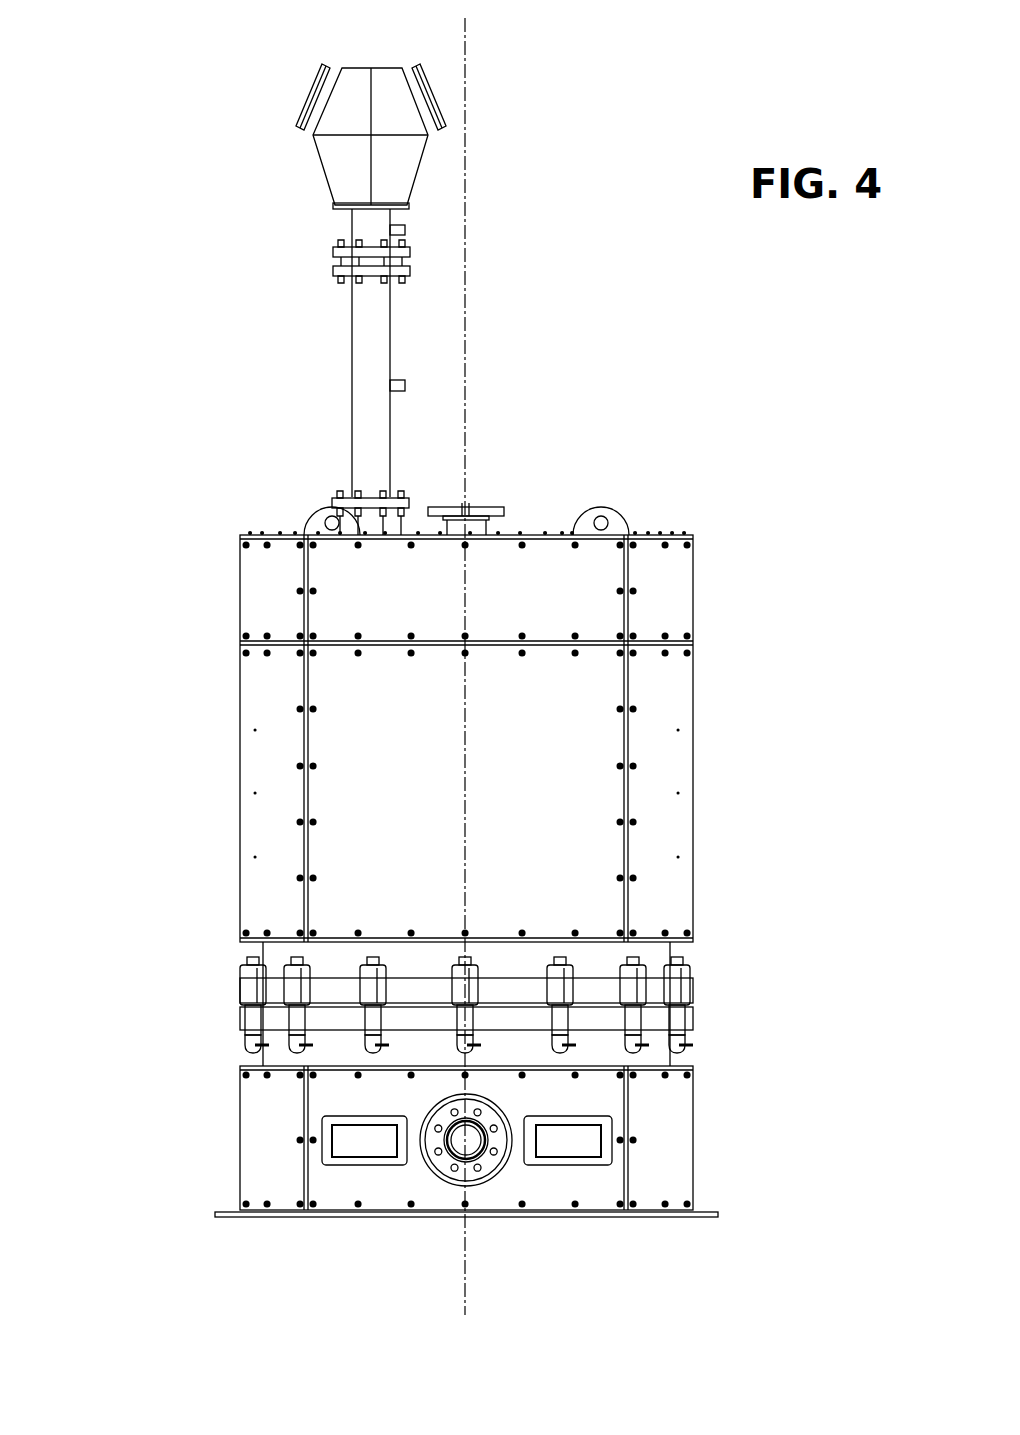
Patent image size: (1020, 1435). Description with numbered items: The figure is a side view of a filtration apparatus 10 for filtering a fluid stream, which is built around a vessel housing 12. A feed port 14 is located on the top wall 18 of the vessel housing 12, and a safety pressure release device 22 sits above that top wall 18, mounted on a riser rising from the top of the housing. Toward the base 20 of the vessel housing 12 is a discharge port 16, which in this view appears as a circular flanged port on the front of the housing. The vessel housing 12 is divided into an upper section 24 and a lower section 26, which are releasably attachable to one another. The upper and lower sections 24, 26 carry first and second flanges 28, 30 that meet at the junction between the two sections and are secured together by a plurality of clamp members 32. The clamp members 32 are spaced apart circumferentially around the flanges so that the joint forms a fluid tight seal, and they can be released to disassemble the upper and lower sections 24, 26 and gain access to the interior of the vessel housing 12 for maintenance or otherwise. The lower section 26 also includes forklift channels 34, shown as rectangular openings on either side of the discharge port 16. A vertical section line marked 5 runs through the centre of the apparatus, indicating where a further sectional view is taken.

The filtration apparatus 10 is at (103, 80).
The section line 5 is at (465, 1313).
The safety pressure release device 22 is at (340, 105).
The feed port 14 is at (480, 510).
The top wall 18 is at (666, 533).
The vessel housing 12 is at (667, 695).
The upper section 24 is at (198, 535).
The lower section 26 is at (198, 1010).
The first flange 28 is at (598, 990).
The second flange 30 is at (592, 1020).
The clamp members 32 is at (680, 985).
The discharge port 16 is at (487, 1160).
The forklift channels 34 is at (356, 1138).
The base 20 is at (700, 1213).